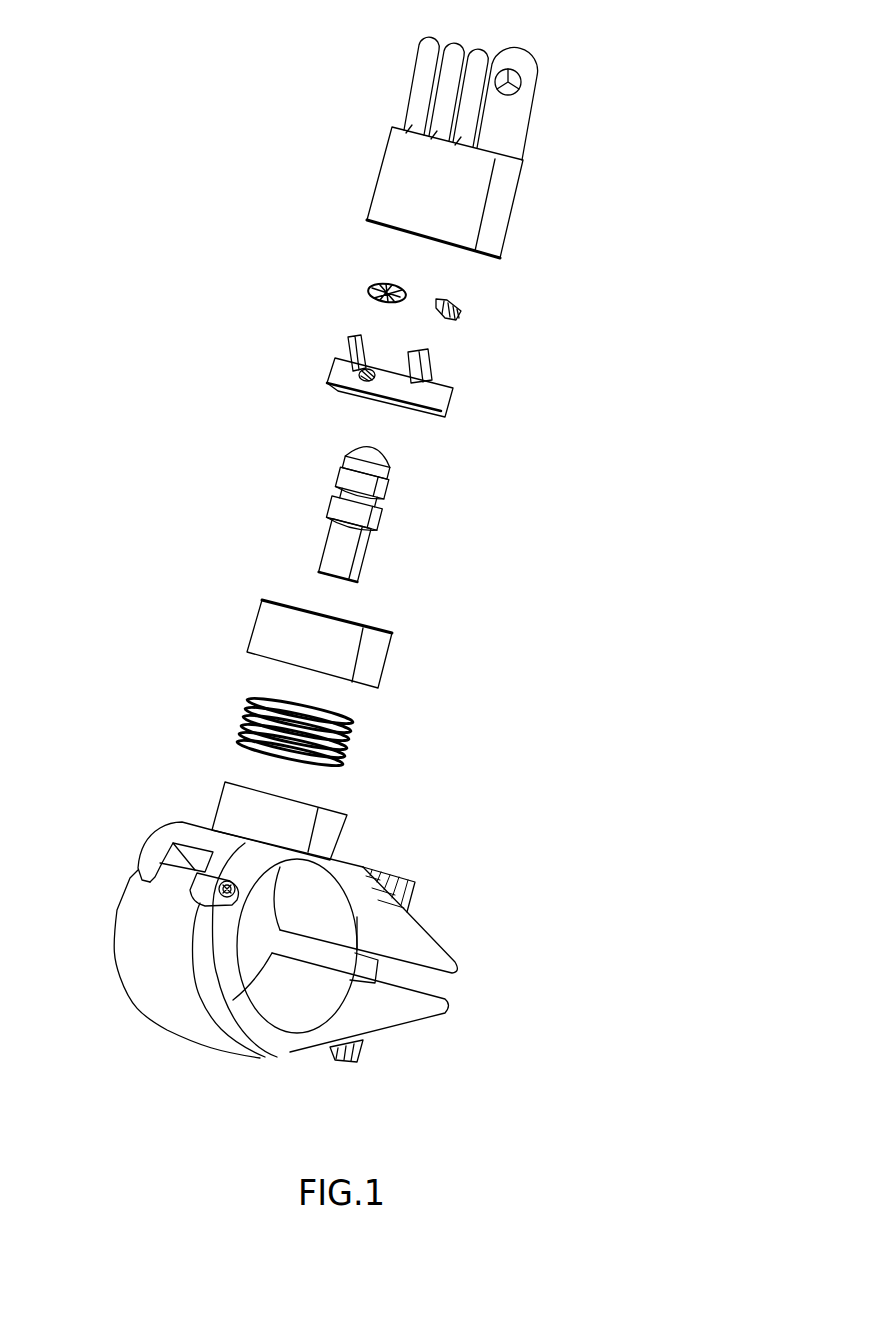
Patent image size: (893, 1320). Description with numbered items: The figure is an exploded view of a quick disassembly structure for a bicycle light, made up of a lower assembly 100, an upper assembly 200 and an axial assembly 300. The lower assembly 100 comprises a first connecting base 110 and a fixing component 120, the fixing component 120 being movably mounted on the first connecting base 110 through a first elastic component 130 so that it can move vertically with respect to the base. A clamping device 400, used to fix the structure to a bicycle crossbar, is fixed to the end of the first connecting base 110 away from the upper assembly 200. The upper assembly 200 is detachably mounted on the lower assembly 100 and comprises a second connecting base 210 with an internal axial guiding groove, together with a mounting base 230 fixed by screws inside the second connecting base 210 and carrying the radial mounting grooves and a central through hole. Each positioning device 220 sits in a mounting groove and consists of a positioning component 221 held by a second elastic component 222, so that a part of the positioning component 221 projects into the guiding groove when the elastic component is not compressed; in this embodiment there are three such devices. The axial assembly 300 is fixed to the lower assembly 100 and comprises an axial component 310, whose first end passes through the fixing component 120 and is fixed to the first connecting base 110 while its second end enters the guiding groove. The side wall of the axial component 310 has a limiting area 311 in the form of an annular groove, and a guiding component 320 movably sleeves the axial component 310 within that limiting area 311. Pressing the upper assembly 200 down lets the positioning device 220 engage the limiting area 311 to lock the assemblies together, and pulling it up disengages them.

The lower assembly 100 is at (548, 635).
The first connecting base 110 is at (337, 825).
The fixing component 120 is at (383, 659).
The first elastic component 130 is at (338, 749).
The upper assembly 200 is at (670, 183).
The second connecting base 210 is at (475, 205).
The positioning device 220 is at (628, 283).
The positioning component 221 is at (447, 305).
The second elastic component 222 is at (455, 315).
The mounting base 230 is at (437, 400).
The axial assembly 300 is at (170, 583).
The axial component 310 is at (333, 537).
The limiting area 311 is at (337, 482).
The guiding component 320 is at (337, 495).
The clamping device 400 is at (390, 927).